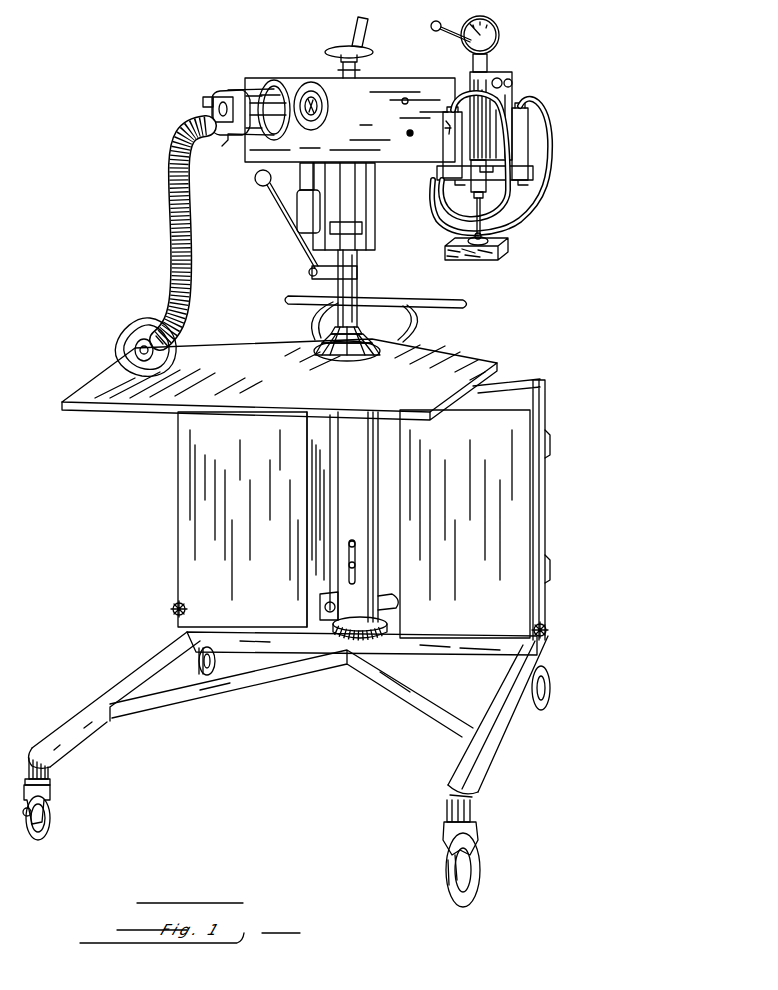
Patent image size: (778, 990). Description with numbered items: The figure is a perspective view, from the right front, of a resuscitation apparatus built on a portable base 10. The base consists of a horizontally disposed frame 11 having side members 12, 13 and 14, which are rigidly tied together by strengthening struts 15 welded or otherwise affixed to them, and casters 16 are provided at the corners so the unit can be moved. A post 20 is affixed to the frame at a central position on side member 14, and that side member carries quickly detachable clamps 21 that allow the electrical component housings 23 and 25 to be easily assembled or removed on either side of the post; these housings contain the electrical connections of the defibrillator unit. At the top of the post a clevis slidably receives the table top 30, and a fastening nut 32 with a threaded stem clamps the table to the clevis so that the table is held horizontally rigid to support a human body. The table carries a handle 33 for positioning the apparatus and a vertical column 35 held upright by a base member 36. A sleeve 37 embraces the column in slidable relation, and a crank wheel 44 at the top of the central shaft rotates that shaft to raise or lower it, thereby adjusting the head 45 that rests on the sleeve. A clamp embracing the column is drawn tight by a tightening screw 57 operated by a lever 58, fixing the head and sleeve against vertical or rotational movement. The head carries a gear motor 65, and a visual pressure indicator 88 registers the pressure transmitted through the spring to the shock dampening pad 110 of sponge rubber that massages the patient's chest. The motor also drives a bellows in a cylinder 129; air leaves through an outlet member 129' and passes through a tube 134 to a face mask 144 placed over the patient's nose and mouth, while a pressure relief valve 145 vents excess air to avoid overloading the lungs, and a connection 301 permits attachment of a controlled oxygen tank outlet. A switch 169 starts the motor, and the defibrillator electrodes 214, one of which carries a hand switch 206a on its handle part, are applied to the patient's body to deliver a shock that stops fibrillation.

The portable base 10 is at (563, 472).
The frame 11 is at (309, 769).
The side member 12 is at (90, 737).
The side member 13 is at (470, 759).
The side member 14 is at (477, 661).
The strengthening struts 15 is at (400, 698).
The casters 16 is at (548, 690).
The post 20 is at (378, 482).
The quickly detachable clamps 21 is at (172, 608).
The electrical component housing 23 is at (522, 547).
The electrical component housing 25 is at (193, 488).
The table top 30 is at (133, 402).
The fastening nut 32 is at (362, 331).
The handle 33 is at (423, 305).
The vertical column 35 is at (350, 288).
The base member 36 is at (360, 358).
The sleeve 37 is at (362, 203).
The crank wheel 44 is at (343, 48).
The head 45 is at (397, 82).
The tightening screw 57 is at (307, 270).
The lever 58 is at (273, 198).
The gear motor 65 is at (308, 171).
The visual pressure indicator 88 is at (480, 33).
The shock dampening pad 110 is at (497, 258).
The cylinder 129 is at (270, 96).
The outlet member 129' is at (209, 92).
The tube 134 is at (168, 208).
The face mask 144 is at (124, 348).
The pressure relief valve 145 is at (226, 134).
The switch 169 is at (408, 133).
The hand switch 206a is at (450, 128).
The electrodes 214 is at (522, 128).
The connection 301 is at (229, 150).